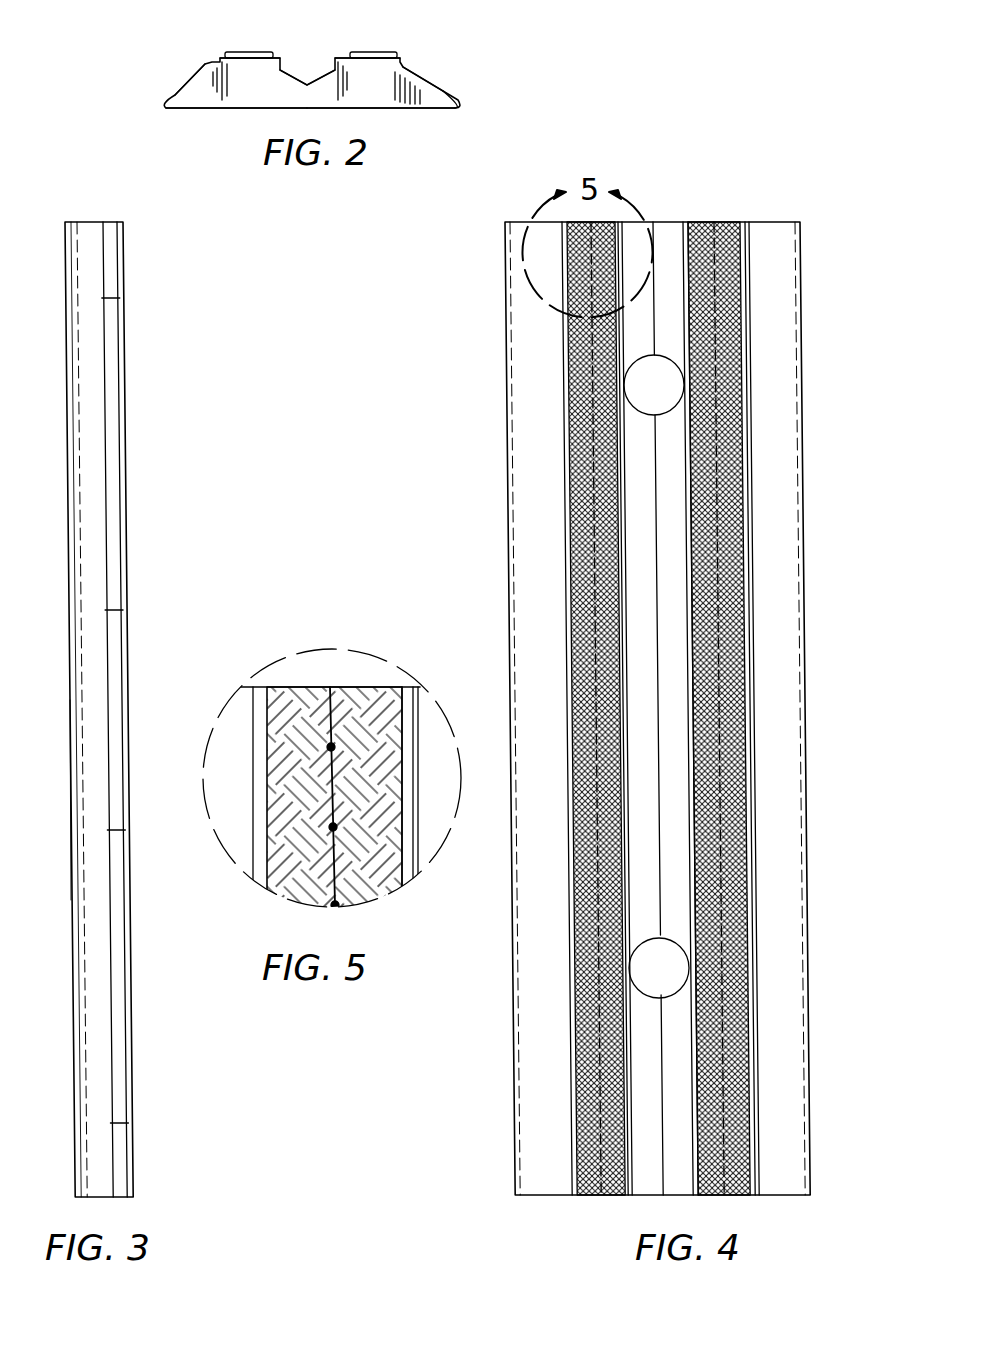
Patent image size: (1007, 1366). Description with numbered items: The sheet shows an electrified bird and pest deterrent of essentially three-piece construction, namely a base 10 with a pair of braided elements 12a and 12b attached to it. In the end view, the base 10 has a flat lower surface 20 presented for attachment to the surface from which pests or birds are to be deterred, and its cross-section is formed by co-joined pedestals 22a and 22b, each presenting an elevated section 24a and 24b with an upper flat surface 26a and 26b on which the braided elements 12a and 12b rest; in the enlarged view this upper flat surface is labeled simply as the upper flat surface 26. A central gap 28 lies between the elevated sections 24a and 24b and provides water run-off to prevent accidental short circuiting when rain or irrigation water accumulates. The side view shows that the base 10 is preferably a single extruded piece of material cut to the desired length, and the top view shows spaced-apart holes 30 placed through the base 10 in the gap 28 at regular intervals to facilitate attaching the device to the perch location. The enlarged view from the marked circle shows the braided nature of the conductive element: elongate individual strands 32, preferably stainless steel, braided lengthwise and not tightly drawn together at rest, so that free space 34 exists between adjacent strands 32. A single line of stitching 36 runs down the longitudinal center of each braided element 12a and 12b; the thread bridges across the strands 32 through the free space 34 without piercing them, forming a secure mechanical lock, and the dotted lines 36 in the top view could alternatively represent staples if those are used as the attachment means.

In FIG. 2, the base 10 is at (146, 112).
In FIG. 3, the base 10 is at (45, 573).
In FIG. 4, the base 10 is at (822, 516).
In FIG. 2, the braided element 12a is at (377, 50).
In FIG. 4, the braided element 12a is at (727, 228).
In FIG. 2, the braided element 12b is at (257, 50).
In FIG. 5, the braided element 12b is at (292, 695).
In FIG. 2, the flat lower surface 20 is at (430, 103).
In FIG. 2, the pedestal 22a is at (385, 95).
In FIG. 2, the pedestal 22b is at (250, 93).
In FIG. 2, the elevated section 24a is at (400, 63).
In FIG. 2, the elevated section 24b is at (205, 65).
In FIG. 5, the shoulder 26 is at (258, 690).
In FIG. 2, the upper flat surface 26a is at (353, 50).
In FIG. 3, the upper flat surface 26a is at (70, 815).
In FIG. 2, the upper flat surface 26b is at (240, 52).
In FIG. 2, the central gap 28 is at (305, 83).
In FIG. 4, the central gap 28 is at (670, 230).
In FIG. 4, the holes 30 is at (668, 382).
In FIG. 5, the individual strands 32 is at (390, 700).
In FIG. 5, the free space 34 is at (390, 730).
In FIG. 4, the line of stitching 36 is at (712, 283).
In FIG. 5, the line of stitching 36 is at (340, 700).